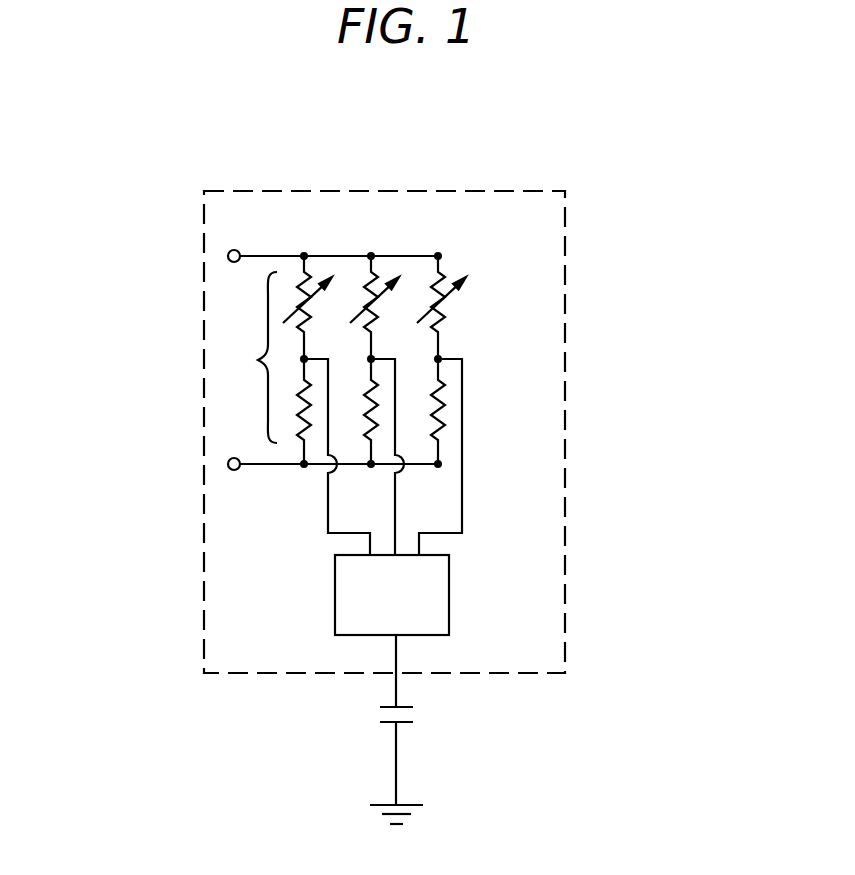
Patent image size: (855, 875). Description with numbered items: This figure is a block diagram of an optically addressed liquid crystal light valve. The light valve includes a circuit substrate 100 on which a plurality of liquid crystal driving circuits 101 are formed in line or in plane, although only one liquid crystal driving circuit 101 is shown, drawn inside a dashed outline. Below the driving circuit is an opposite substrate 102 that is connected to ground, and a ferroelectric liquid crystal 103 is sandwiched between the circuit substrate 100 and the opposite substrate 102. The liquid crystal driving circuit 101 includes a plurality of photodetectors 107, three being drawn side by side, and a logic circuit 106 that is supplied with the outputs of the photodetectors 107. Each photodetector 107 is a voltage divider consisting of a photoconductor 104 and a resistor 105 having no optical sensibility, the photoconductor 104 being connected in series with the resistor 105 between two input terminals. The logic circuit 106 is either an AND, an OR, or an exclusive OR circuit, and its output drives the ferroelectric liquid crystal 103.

The circuit substrate 100 is at (388, 706).
The liquid crystal driving circuit 101 is at (492, 190).
The opposite substrate 102 is at (405, 727).
The ferroelectric liquid crystal 103 is at (415, 712).
The photoconductor 104 is at (448, 314).
The resistor 105 is at (445, 412).
The logic circuit 106 is at (449, 578).
The photodetector 107 is at (253, 364).